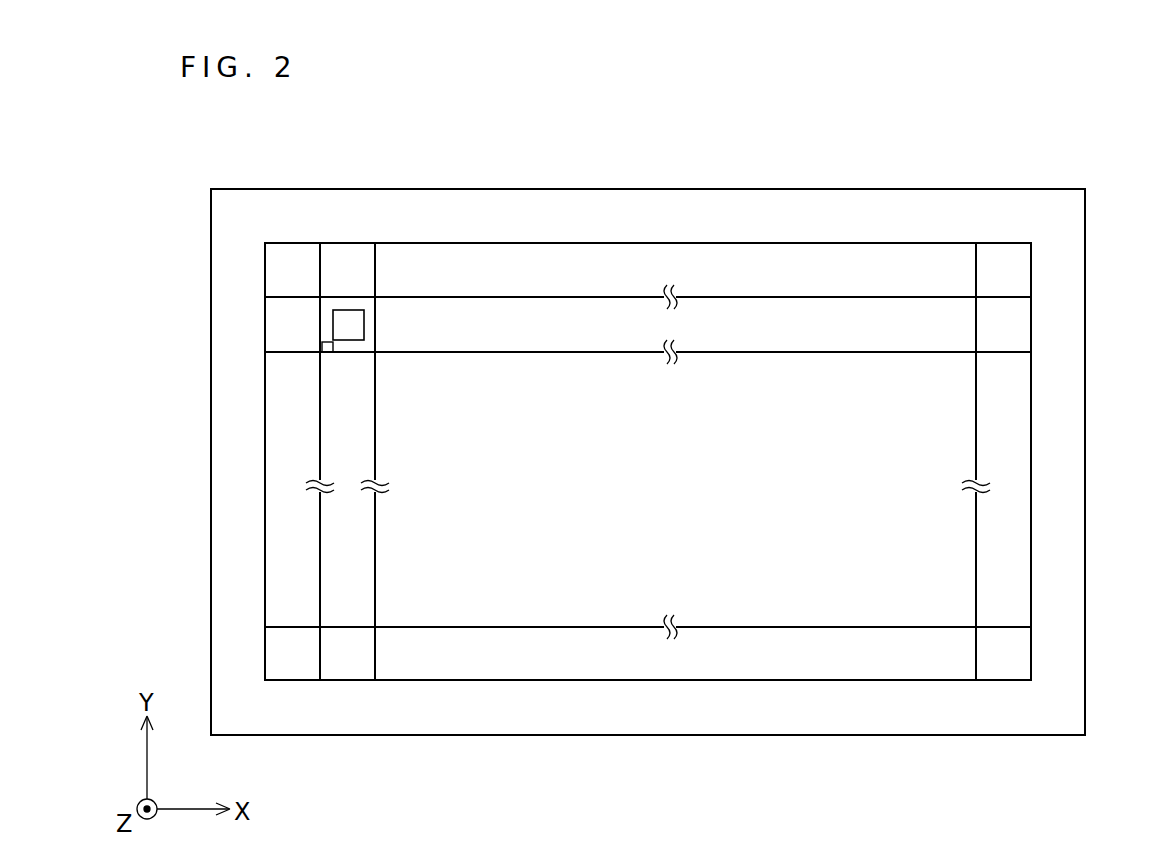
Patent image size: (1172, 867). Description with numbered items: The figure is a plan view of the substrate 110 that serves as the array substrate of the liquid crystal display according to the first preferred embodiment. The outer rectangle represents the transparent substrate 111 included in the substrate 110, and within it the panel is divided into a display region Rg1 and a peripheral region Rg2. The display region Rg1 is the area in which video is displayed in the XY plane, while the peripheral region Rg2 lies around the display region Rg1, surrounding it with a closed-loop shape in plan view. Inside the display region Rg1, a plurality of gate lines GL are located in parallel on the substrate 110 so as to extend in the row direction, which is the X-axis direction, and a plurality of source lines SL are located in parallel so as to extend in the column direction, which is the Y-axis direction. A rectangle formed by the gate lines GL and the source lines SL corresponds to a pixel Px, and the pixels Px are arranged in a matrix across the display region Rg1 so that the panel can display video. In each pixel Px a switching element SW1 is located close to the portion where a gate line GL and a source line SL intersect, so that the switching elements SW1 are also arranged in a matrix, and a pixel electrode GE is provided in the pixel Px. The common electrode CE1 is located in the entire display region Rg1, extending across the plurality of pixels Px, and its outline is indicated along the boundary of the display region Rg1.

The substrate 110 is at (1092, 151).
The transparent substrate 111 is at (904, 190).
The display region Rg1 is at (1031, 243).
The peripheral region Rg2 is at (1062, 327).
The common electrode CE1 is at (649, 242).
The gate line GL is at (481, 297).
The source line SL is at (377, 410).
The pixel Px is at (353, 305).
The pixel electrode GE is at (365, 326).
The switching element SW1 is at (327, 342).